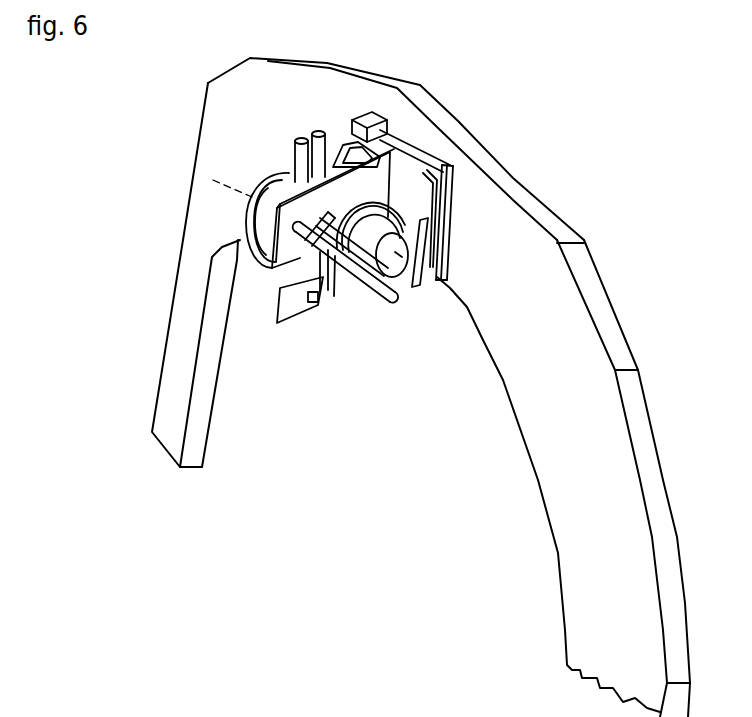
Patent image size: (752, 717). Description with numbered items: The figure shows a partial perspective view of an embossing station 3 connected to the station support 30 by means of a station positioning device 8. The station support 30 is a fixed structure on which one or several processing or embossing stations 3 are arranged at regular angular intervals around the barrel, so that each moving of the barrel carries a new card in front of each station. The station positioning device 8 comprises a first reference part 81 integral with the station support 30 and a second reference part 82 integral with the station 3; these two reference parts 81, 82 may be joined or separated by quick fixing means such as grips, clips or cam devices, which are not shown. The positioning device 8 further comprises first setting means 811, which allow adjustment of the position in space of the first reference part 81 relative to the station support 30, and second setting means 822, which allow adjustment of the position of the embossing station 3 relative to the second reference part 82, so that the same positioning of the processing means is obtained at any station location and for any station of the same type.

The embossing station 3 is at (258, 278).
The station support 30 is at (507, 303).
The station positioning device 8 is at (452, 166).
The first reference part 81 is at (449, 165).
The first setting means 811 is at (360, 143).
The second reference part 82 is at (397, 175).
The second setting means 822 is at (353, 117).